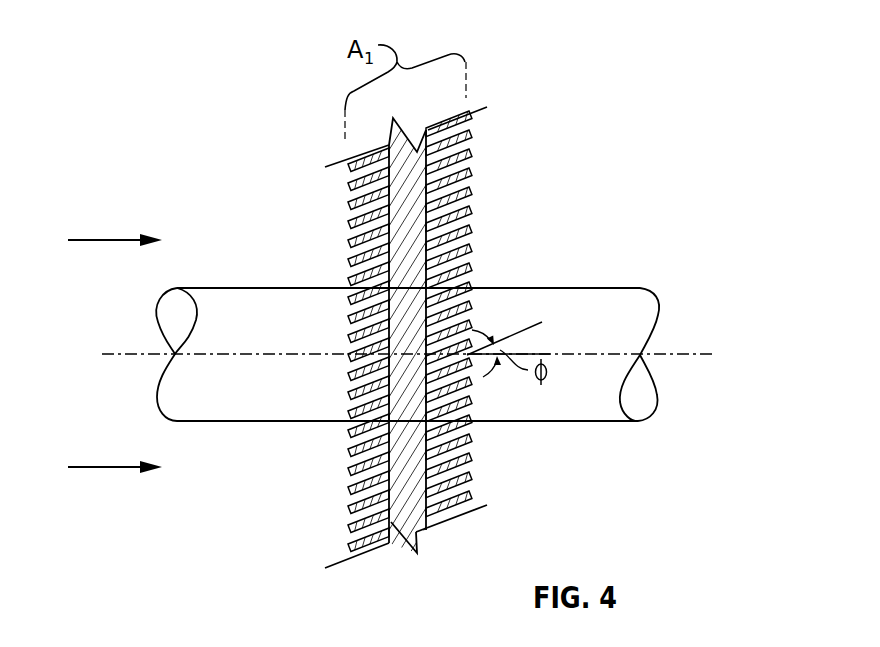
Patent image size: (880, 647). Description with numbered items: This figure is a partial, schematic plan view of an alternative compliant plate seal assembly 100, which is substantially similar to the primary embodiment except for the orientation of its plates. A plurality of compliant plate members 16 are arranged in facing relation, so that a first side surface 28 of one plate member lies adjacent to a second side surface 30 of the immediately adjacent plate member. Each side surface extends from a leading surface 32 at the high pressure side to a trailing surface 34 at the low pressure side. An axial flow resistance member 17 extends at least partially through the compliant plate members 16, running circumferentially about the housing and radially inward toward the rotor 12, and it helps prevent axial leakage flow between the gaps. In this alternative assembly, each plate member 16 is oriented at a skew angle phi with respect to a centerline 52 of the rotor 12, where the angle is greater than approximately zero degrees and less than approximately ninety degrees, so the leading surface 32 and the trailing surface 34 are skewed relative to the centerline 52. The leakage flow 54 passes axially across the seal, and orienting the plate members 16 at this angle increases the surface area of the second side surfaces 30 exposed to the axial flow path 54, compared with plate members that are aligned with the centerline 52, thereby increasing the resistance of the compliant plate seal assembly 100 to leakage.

The compliant plate seal assembly 100 is at (222, 56).
The rotor 12 is at (637, 302).
The centerline 52 is at (688, 352).
The leakage flow 54 is at (103, 238).
The axial flow resistance member 17 is at (424, 173).
The leading surface 32 is at (348, 217).
The trailing surface 34 is at (467, 202).
The second side surface 30 is at (463, 452).
The first side surface 28 is at (467, 473).
The compliant plate member 16 is at (370, 551).